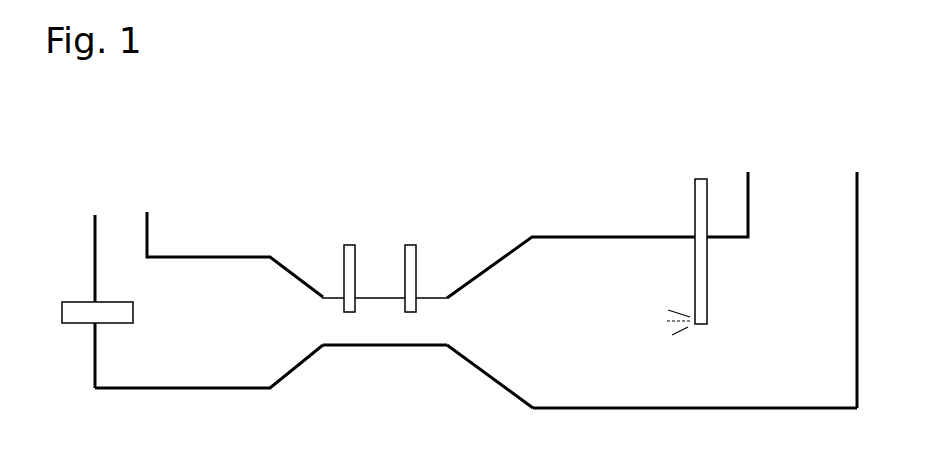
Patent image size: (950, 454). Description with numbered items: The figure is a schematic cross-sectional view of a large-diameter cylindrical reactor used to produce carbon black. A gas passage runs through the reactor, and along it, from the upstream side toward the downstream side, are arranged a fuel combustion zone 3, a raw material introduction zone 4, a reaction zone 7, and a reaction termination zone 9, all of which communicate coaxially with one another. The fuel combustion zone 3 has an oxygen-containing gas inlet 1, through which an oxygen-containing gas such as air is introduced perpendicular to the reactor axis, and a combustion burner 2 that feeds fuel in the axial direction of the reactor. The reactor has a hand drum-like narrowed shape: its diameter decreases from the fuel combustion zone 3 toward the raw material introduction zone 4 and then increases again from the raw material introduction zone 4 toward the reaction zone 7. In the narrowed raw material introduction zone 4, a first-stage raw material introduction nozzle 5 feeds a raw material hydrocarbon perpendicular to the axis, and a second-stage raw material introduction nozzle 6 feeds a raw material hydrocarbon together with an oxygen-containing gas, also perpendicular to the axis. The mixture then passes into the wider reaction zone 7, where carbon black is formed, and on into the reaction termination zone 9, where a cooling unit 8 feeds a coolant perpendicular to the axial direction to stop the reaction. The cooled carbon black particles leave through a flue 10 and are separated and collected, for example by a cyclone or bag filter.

The oxygen-containing gas inlet 1 is at (110, 300).
The combustion burner 2 is at (82, 312).
The fuel combustion zone 3 is at (209, 300).
The raw material introduction zone 4 is at (384, 321).
The first-stage raw material introduction nozzle 5 is at (347, 250).
The second-stage raw material introduction nozzle 6 is at (410, 250).
The reaction zone 7 is at (597, 290).
The cooling unit 8 is at (699, 228).
The reaction termination zone 9 is at (695, 355).
The flue 10 is at (824, 289).